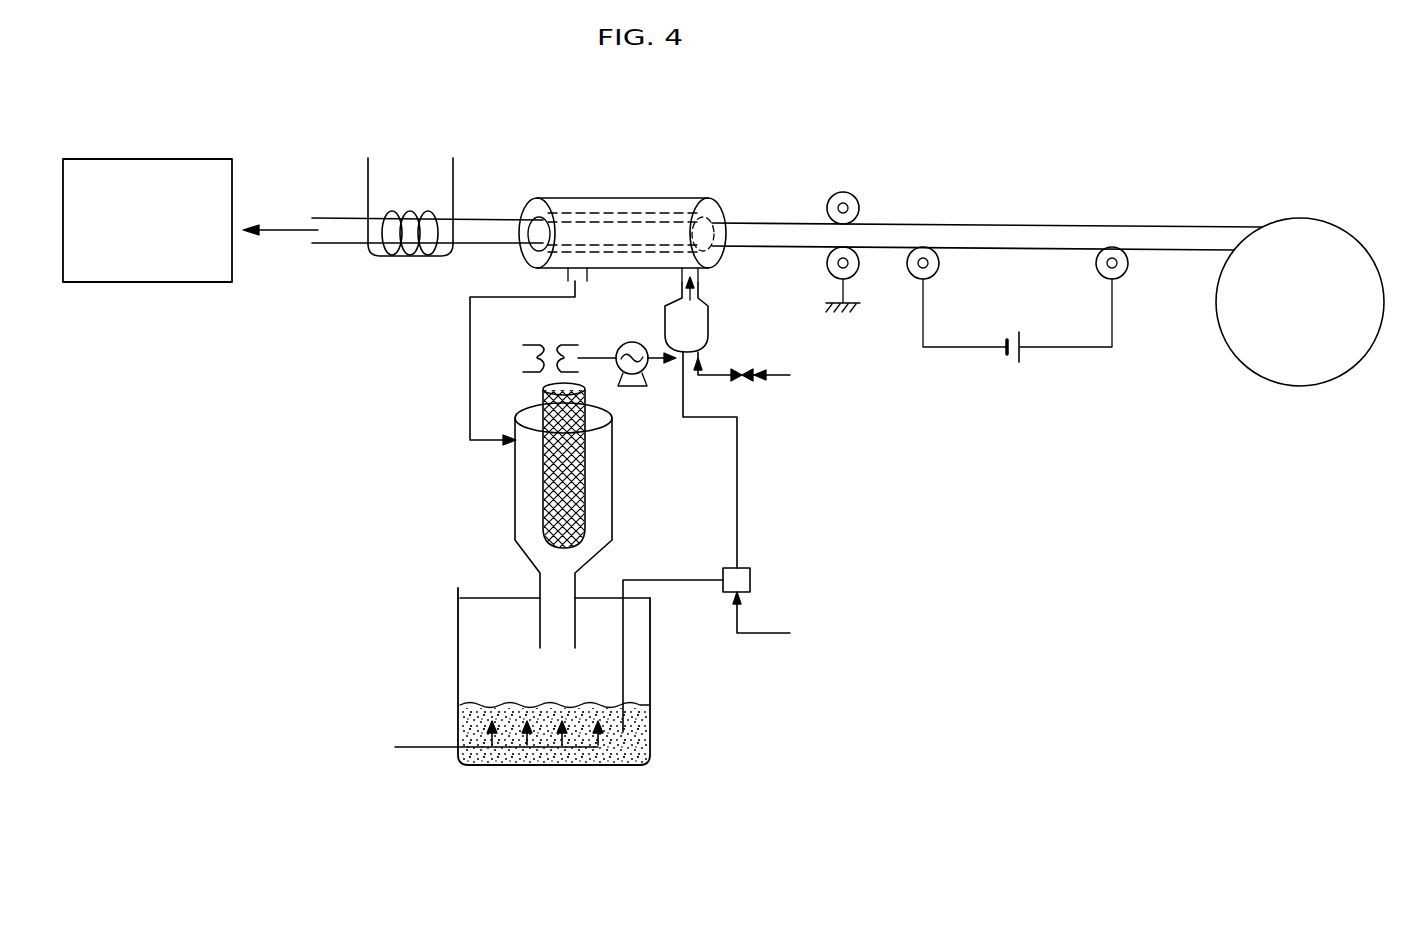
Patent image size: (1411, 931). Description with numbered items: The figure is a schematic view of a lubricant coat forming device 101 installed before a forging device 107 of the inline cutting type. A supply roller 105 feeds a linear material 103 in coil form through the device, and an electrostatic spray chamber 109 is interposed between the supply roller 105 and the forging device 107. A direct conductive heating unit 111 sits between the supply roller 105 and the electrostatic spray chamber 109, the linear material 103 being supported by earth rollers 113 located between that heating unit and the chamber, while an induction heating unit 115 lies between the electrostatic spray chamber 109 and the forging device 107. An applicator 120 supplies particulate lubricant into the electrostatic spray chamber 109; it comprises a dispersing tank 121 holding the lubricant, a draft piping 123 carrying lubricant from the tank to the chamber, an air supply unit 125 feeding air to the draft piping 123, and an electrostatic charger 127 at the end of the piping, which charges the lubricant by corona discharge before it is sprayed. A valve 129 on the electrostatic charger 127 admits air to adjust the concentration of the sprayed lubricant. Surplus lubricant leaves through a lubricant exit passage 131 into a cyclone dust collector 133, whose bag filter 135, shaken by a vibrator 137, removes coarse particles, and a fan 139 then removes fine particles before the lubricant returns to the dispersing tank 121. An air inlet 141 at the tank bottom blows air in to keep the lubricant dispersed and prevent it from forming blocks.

The lubricant coat forming device 101 is at (773, 114).
The linear material 103 is at (970, 232).
The supply roller 105 is at (1302, 370).
The forging device 107 is at (115, 182).
The electrostatic spray chamber 109 is at (628, 200).
The direct conductive heating unit 111 is at (1043, 355).
The earth rollers 113 is at (858, 257).
The induction heating unit 115 is at (412, 180).
The applicator 120 is at (393, 457).
The dispersing tank 121 is at (630, 657).
The draft piping 123 is at (628, 578).
The air supply unit 125 is at (740, 578).
The electrostatic charger 127 is at (698, 326).
The valve 129 is at (742, 378).
The lubricant exit passage 131 is at (470, 320).
The cyclone dust collector 133 is at (515, 480).
The bag filter 135 is at (585, 502).
The vibrator 137 is at (552, 380).
The fan 139 is at (632, 387).
The air inlet 141 is at (500, 752).